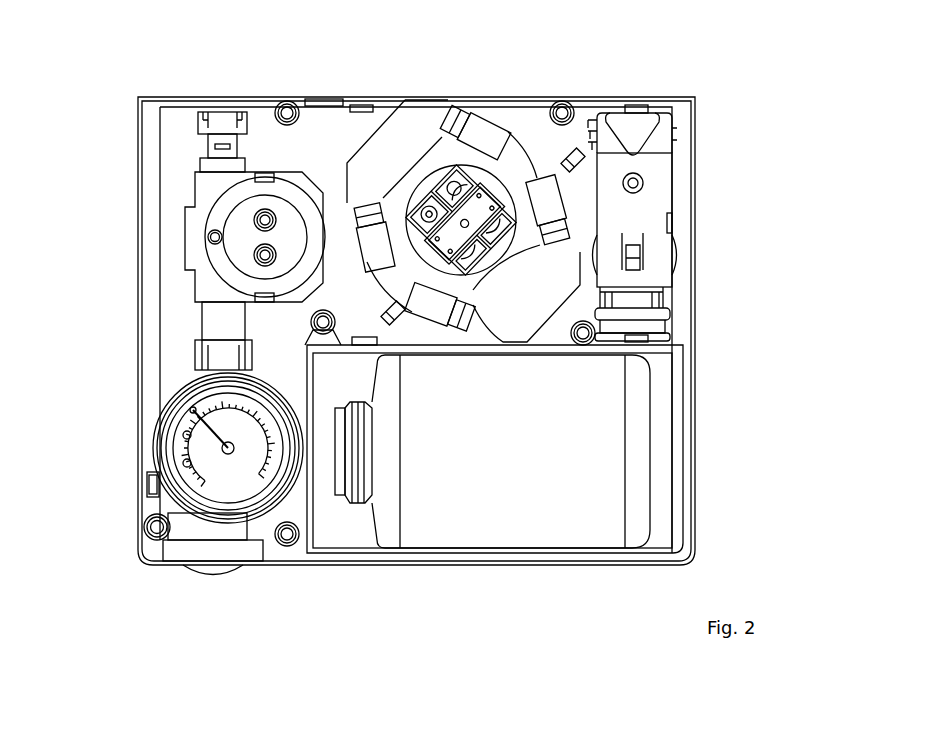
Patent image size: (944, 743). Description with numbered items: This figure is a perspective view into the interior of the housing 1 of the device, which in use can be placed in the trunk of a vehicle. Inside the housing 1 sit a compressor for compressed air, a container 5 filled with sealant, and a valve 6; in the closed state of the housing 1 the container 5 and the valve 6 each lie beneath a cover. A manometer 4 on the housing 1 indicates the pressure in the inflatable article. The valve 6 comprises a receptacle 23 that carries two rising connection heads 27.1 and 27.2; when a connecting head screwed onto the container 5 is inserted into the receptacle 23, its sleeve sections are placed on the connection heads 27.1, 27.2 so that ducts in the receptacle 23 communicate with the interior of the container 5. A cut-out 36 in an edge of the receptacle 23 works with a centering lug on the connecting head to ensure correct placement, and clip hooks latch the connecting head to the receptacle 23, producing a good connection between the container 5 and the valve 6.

The housing 1 is at (330, 93).
The manometer 4 is at (185, 463).
The container 5 is at (615, 452).
The valve 6 is at (230, 198).
The receptacle 23 is at (230, 161).
The connection head 27.1 is at (263, 254).
The connection head 27.2 is at (262, 220).
The cut-out 36 is at (318, 232).